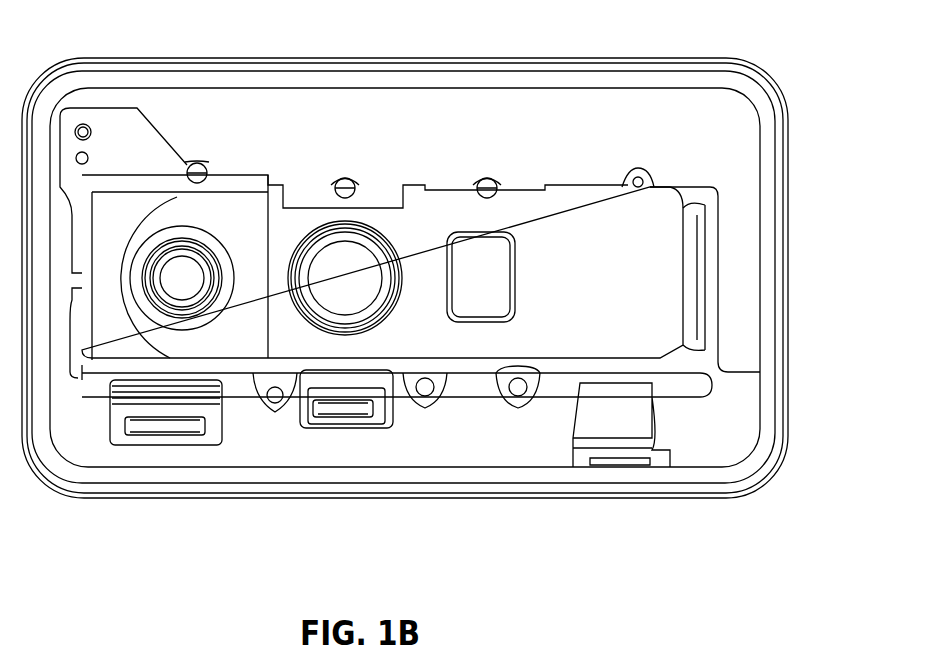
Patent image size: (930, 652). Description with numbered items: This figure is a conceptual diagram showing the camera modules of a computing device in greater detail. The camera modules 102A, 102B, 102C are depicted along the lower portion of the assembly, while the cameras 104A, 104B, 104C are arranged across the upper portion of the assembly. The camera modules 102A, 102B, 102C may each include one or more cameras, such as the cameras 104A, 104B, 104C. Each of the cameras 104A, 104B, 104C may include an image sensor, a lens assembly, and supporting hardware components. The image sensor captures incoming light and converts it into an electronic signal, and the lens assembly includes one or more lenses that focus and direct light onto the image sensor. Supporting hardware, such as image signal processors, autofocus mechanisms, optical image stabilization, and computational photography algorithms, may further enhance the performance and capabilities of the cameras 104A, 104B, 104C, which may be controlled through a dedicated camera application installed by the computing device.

The camera 104A is at (177, 268).
The camera 104B is at (350, 268).
The camera 104C is at (488, 257).
The camera module 102A is at (203, 395).
The camera module 102B is at (373, 388).
The camera module 102C is at (595, 390).